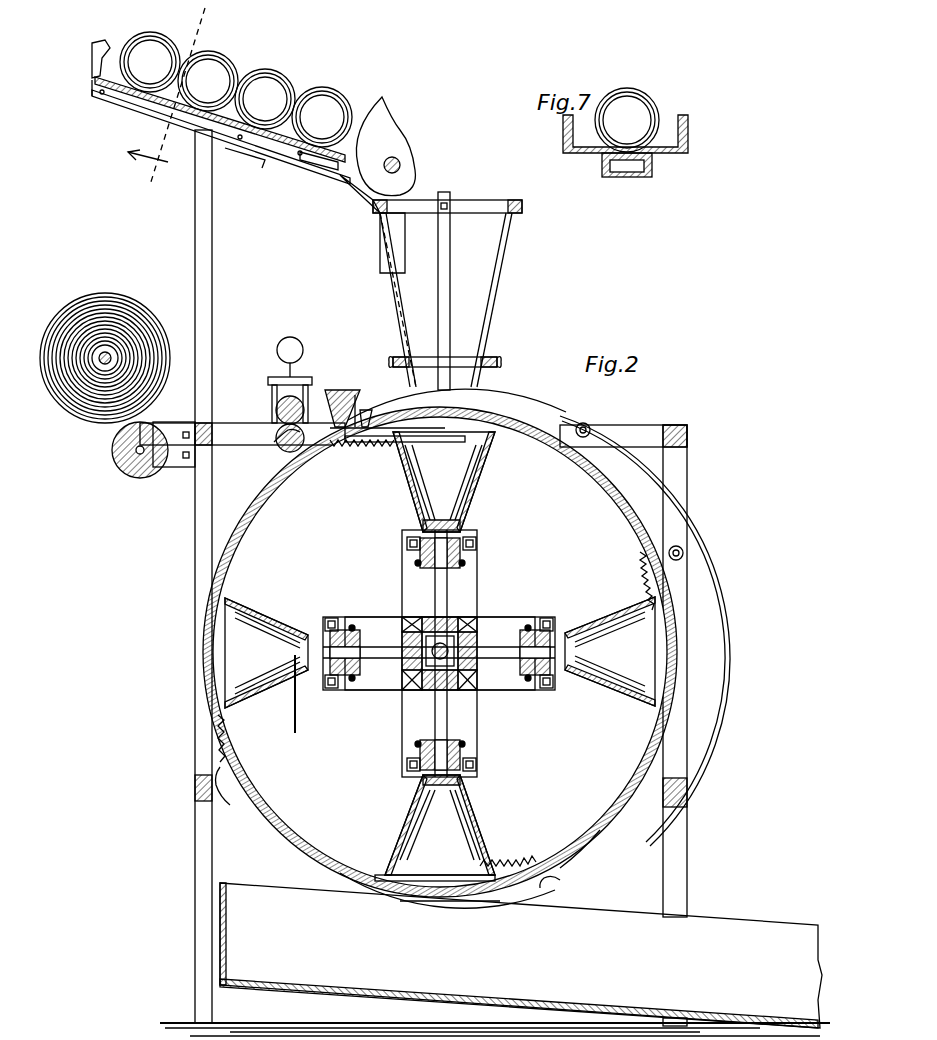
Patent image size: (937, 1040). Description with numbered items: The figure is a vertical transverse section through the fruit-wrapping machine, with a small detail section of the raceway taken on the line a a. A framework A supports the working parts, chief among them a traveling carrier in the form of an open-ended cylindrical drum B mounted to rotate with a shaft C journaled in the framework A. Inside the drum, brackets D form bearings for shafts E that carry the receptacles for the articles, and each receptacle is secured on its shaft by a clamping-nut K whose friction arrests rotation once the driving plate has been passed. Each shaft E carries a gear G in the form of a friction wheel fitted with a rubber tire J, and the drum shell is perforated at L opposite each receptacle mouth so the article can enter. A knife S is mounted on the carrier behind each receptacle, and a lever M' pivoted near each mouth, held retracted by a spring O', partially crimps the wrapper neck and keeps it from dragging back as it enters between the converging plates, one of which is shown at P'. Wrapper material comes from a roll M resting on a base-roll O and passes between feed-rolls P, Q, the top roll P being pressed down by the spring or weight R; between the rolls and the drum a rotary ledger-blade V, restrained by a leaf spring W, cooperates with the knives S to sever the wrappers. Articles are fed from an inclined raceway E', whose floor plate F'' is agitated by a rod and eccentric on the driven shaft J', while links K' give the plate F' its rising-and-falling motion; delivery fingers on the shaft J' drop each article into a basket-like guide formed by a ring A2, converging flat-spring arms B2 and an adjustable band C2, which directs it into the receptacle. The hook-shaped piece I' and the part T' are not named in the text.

In FIG. 2, the framework A is at (195, 545).
In FIG. 2, the links K' is at (457, 563).
In FIG. 2, the perforation L is at (485, 408).
In FIG. 2, the converging plate P' is at (645, 631).
In FIG. 2, the cylindrical drum B is at (655, 760).
In FIG. 2, the spring O' is at (436, 653).
In FIG. 2, the knife S is at (312, 428).
In FIG. 2, the shaft C is at (452, 640).
In FIG. 2, the shafts E is at (439, 653).
In FIG. 2, the brackets D is at (362, 628).
In FIG. 2, the gear G is at (428, 565).
In FIG. 2, the rubber tire J is at (443, 648).
In FIG. 2, the movable plate F' is at (440, 653).
In FIG. 2, the clamping-nut K is at (441, 659).
In FIG. 2, the lever M' is at (382, 658).
In FIG. 2, the ring A2 is at (474, 210).
In FIG. 2, the arms B2 is at (380, 248).
In FIG. 2, the band or ring C2 is at (490, 360).
In FIG. 2, the hook I' is at (377, 155).
In FIG. 2, the shaft J' is at (411, 152).
In FIG. 2, the movable plate F'' is at (221, 117).
In FIG. 7, the movable plate F'' is at (627, 184).
In FIG. 2, the raceway E' is at (230, 73).
In FIG. 7, the raceway E' is at (645, 120).
In FIG. 2, the section line a is at (168, 98).
In FIG. 2, the roll M is at (105, 339).
In FIG. 2, the base-roll O is at (147, 469).
In FIG. 2, the spring or weight R is at (278, 340).
In FIG. 2, the top feed-roll P is at (266, 403).
In FIG. 2, the feed-roll Q is at (280, 448).
In FIG. 2, the rotary ledger-blade V is at (338, 395).
In FIG. 2, the leaf spring W is at (356, 395).
In FIG. 2, the stop T' is at (370, 413).